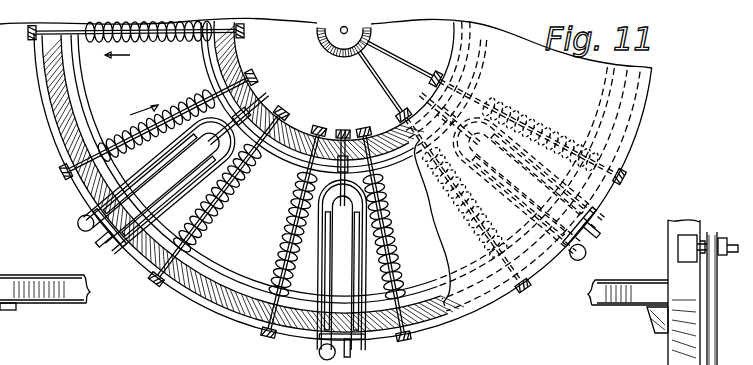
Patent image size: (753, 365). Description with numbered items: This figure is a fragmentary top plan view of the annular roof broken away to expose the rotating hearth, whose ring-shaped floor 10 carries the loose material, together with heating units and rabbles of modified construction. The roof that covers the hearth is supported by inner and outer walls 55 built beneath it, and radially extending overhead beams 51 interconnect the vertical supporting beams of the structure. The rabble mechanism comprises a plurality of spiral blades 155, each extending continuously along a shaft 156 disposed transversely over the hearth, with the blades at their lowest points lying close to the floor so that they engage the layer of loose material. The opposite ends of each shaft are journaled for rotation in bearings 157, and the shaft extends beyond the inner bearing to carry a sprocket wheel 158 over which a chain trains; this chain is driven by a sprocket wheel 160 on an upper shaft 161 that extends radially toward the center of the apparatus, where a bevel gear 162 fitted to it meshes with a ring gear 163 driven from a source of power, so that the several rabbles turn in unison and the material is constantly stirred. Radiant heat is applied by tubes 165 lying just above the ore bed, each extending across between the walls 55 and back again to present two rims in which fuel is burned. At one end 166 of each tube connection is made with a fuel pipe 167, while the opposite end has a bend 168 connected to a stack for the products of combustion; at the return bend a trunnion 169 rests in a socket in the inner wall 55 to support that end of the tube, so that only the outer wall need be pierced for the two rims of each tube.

The ring-shaped floor 10 is at (190, 275).
The overhead beam 51 is at (46, 280).
The wall 55 is at (298, 128).
The spiral blade 155 is at (176, 108).
The shaft 156 is at (208, 104).
The bearing 157 is at (64, 172).
The sprocket wheel 158 is at (245, 40).
The sprocket wheel 160 is at (718, 238).
The upper shaft 161 is at (378, 60).
The bevel gear 162 is at (372, 42).
The ring gear 163 is at (332, 56).
The tube 165 is at (142, 210).
The tube end 166 is at (113, 250).
The fuel pipe 167 is at (102, 255).
The bend 168 is at (72, 224).
The trunnion 169 is at (266, 102).